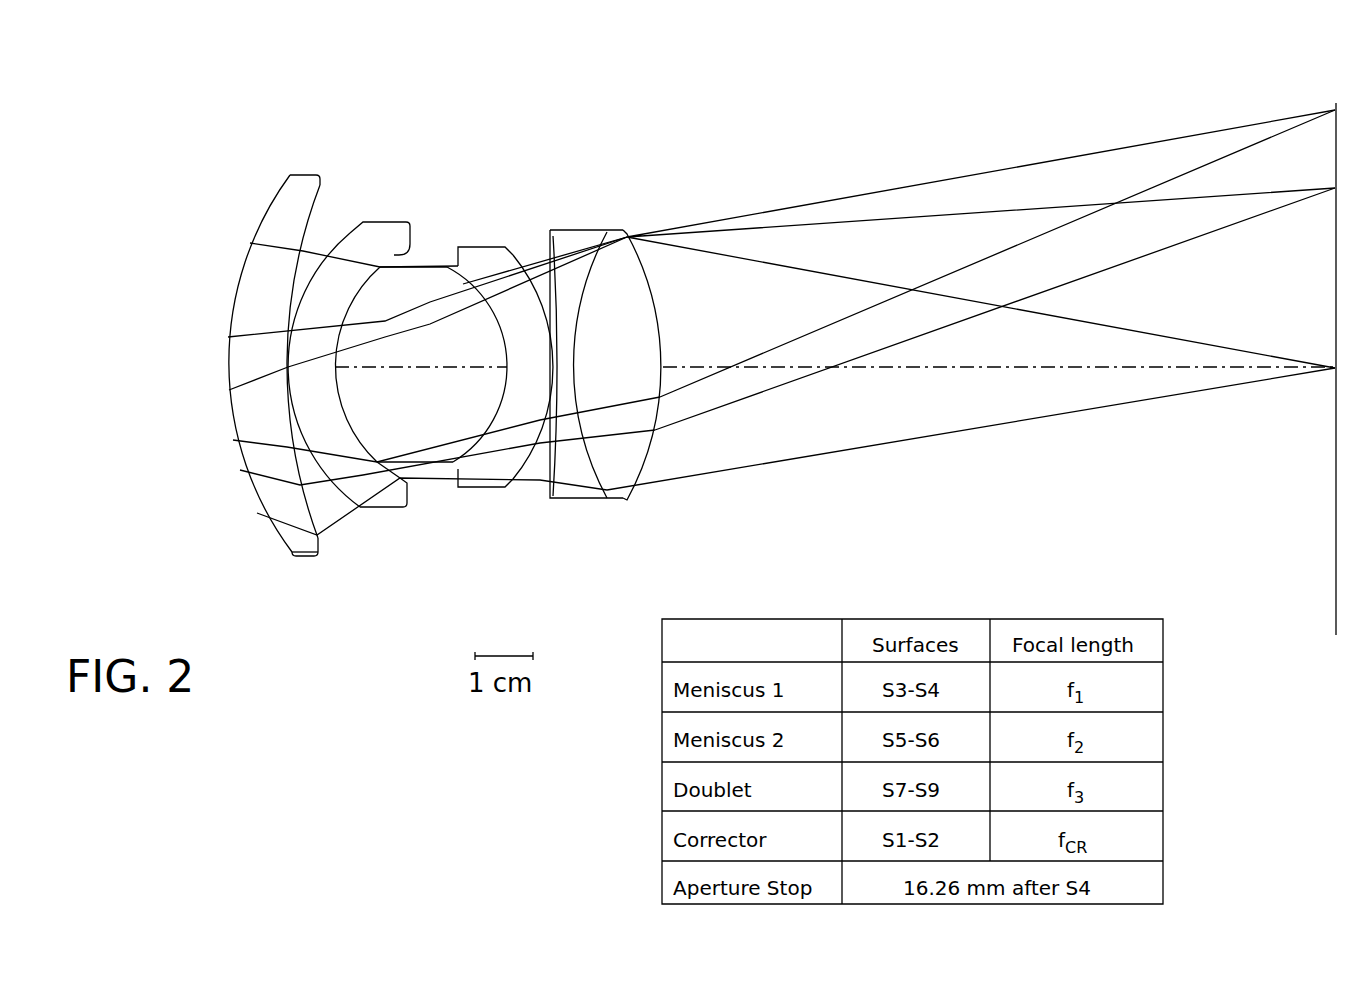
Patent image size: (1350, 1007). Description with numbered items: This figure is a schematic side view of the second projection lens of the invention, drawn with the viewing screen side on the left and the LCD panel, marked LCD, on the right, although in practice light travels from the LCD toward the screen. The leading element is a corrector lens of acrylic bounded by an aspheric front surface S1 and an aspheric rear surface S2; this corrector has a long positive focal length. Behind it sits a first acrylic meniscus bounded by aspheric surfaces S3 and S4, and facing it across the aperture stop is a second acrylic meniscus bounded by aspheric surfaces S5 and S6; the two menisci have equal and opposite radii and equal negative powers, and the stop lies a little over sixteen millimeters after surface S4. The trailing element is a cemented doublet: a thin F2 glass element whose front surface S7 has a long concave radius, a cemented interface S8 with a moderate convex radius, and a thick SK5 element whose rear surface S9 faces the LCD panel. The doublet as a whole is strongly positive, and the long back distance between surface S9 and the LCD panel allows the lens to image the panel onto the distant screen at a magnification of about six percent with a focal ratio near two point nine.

The first surface S1 is at (250, 237).
The second surface S2 is at (305, 222).
The third surface S3 is at (350, 222).
The fourth surface S4 is at (418, 257).
The fifth surface S5 is at (465, 285).
The sixth surface S6 is at (513, 255).
The seventh surface S7 is at (545, 470).
The eighth surface S8 is at (599, 494).
The ninth surface S9 is at (643, 467).
The LCD panel LCD is at (1336, 560).